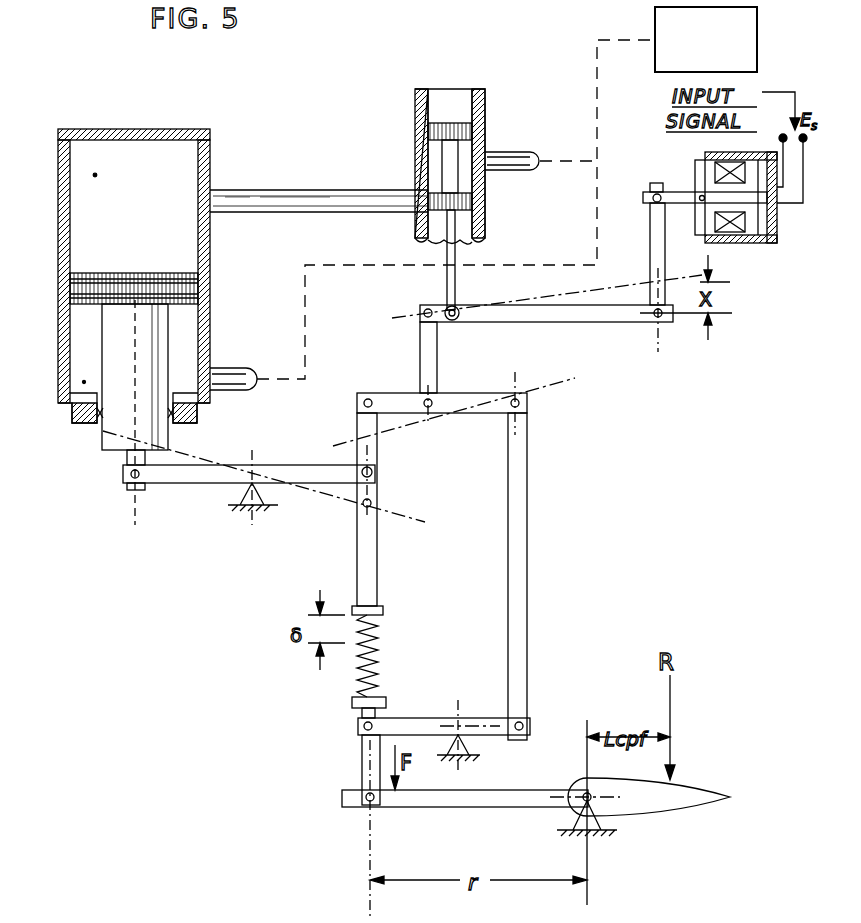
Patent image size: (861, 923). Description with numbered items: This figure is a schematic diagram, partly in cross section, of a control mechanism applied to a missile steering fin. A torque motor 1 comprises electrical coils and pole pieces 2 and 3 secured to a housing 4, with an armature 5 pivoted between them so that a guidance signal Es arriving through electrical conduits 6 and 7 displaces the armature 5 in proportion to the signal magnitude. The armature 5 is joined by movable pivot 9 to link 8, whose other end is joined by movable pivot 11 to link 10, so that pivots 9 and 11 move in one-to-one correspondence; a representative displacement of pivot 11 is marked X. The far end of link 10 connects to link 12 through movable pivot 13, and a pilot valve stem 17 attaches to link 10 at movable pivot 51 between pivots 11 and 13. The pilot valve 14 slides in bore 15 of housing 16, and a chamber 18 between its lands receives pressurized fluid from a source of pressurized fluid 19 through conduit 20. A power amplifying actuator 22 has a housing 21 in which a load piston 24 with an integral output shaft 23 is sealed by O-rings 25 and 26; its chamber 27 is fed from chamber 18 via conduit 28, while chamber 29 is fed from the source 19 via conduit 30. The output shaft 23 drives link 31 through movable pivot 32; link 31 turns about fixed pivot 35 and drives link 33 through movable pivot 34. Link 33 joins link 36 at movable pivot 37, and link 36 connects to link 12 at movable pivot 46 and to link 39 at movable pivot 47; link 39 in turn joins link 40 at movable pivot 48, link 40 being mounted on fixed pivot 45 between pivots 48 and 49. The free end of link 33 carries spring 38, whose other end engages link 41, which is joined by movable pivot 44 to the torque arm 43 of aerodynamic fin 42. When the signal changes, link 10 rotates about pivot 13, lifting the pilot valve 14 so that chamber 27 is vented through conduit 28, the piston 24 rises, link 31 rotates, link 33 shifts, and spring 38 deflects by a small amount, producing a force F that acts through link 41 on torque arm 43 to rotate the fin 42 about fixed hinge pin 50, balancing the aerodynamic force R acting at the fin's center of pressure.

The torque motor 1 is at (713, 150).
The electrical coil and pole piece 2 is at (735, 232).
The electrical coil and pole piece 3 is at (710, 175).
The housing 4 is at (775, 243).
The armature 5 is at (680, 203).
The electrical conduit 6 is at (780, 134).
The electrical conduit 7 is at (808, 195).
The link 8 is at (650, 237).
The movable pivot 9 is at (650, 198).
The link 10 is at (598, 322).
The movable pivot 11 is at (650, 322).
The link 12 is at (420, 341).
The movable pivot 13 is at (428, 305).
The pilot valve 14 is at (430, 130).
The bore 15 is at (442, 90).
The housing 16 is at (483, 118).
The pilot valve stem 17 is at (455, 260).
The chamber 18 is at (430, 162).
The source of pressurized fluid 19 is at (716, 53).
The conduit 20 is at (522, 160).
The housing 21 is at (58, 349).
The power amplifying actuator 22 is at (170, 130).
The output shaft 23 is at (125, 452).
The load piston 24 is at (130, 273).
The O-ring 25 is at (85, 420).
The O-ring 26 is at (70, 289).
The chamber 27 is at (95, 175).
The conduit 28 is at (284, 182).
The chamber 29 is at (84, 382).
The conduit 30 is at (235, 378).
The link 31 is at (190, 483).
The movable pivot 32 is at (130, 476).
The link 33 is at (378, 560).
The movable pivot 34 is at (373, 472).
The fixed pivot 35 is at (245, 508).
The link 36 is at (480, 393).
The movable pivot 37 is at (364, 398).
The spring 38 is at (382, 652).
The link 39 is at (527, 507).
The link 40 is at (466, 718).
The link 41 is at (362, 768).
The aerodynamic fin 42 is at (668, 806).
The torque arm 43 is at (454, 807).
The movable pivot 44 is at (358, 808).
The fixed pivot 45 is at (466, 758).
The movable pivot 46 is at (436, 398).
The movable pivot 47 is at (521, 403).
The movable pivot 48 is at (523, 723).
The movable pivot 49 is at (364, 725).
The hinge pin 50 is at (580, 806).
The movable pivot 51 is at (455, 306).